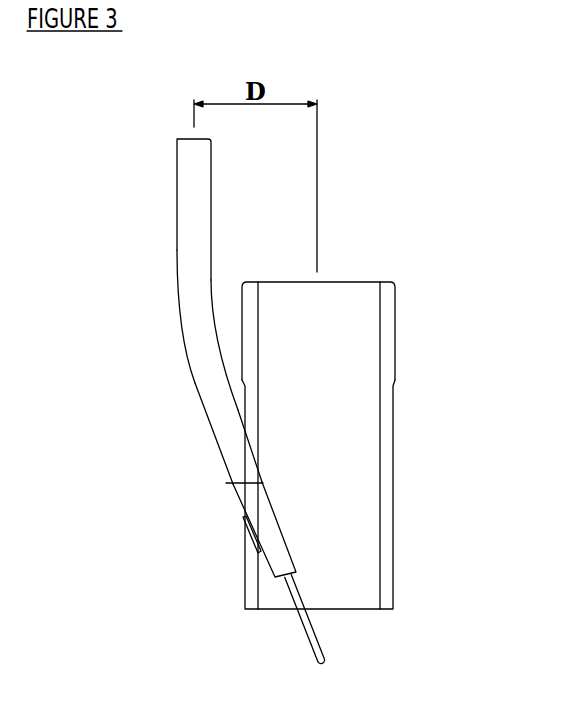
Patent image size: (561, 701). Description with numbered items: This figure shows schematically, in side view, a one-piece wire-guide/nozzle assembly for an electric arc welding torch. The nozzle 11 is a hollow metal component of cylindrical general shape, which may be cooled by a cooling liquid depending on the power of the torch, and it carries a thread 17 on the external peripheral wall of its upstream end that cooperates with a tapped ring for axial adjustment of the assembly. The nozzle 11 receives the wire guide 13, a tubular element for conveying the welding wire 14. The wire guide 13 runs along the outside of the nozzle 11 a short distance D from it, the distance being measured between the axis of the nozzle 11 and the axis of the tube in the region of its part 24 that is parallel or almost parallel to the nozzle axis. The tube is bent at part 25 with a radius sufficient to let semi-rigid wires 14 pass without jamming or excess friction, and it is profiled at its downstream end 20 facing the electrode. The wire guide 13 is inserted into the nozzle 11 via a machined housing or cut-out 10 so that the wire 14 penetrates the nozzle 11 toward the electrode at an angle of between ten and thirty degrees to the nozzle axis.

The machined housing or cut-out 10 is at (281, 401).
The nozzle 11 is at (394, 542).
The wire guide 13 is at (175, 311).
The welding wire 14 is at (294, 624).
The thread 17 is at (404, 335).
The downstream end 20 is at (275, 525).
The parallel portion of the wire guide 24 is at (186, 197).
The bent part 25 is at (190, 351).